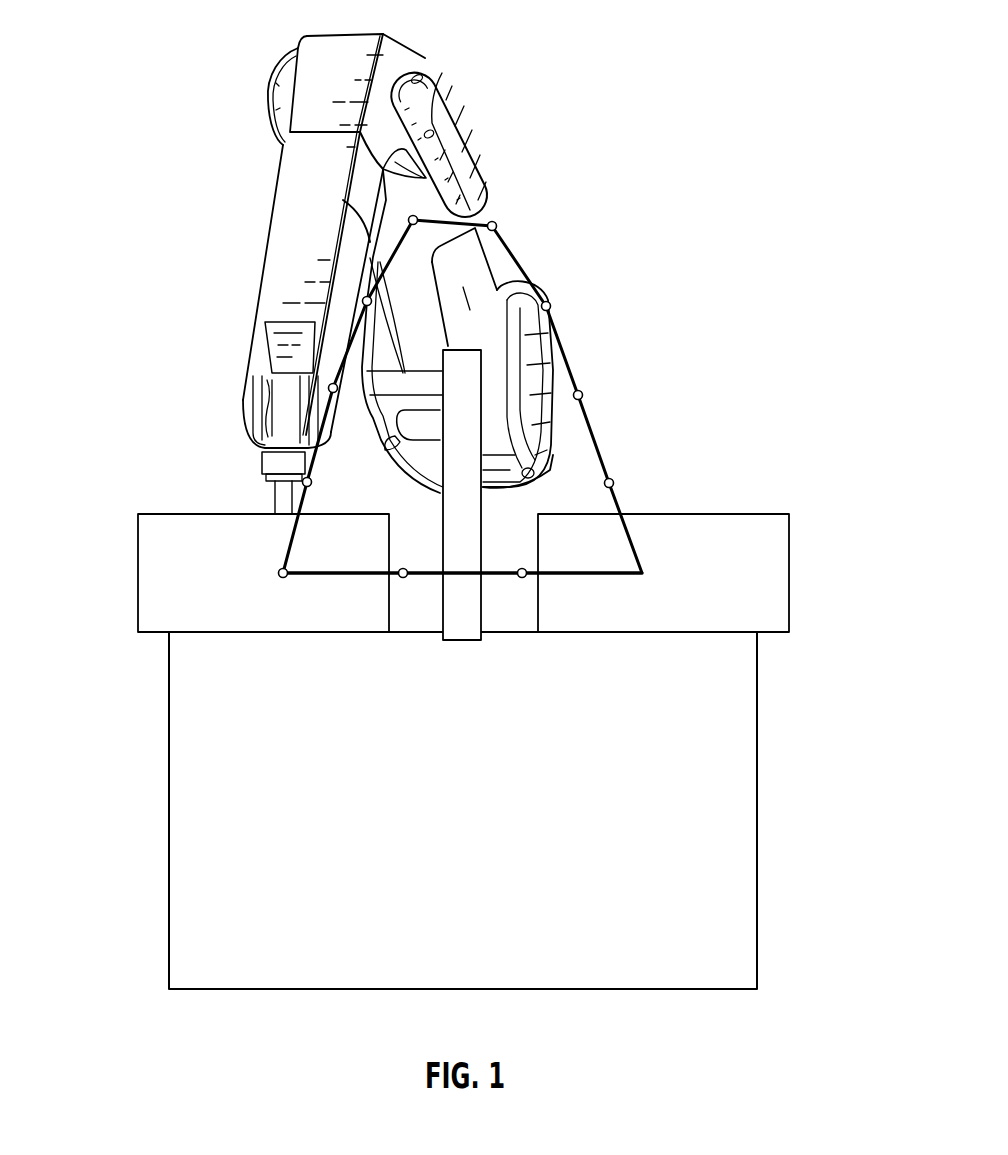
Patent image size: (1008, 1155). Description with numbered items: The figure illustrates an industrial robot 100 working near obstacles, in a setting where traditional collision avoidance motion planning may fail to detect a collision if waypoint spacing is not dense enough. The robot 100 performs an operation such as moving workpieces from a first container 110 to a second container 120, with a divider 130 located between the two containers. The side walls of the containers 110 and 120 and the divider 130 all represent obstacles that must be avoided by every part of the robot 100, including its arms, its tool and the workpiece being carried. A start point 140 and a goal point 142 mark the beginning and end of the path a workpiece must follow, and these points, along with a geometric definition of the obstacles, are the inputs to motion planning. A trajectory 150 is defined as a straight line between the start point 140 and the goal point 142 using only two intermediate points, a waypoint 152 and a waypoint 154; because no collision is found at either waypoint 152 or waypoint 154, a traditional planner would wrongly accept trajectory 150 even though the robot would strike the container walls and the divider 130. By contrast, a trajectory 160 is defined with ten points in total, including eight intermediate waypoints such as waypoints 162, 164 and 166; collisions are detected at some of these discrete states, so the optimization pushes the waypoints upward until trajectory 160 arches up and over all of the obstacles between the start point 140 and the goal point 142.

The robot 100 is at (465, 115).
The first container 110 is at (790, 553).
The second container 120 is at (137, 572).
The divider 130 is at (455, 642).
The start point 140 is at (650, 572).
The goal point 142 is at (283, 578).
The trajectory 150 is at (577, 577).
The waypoint 152 is at (522, 578).
The waypoint 154 is at (402, 578).
The trajectory 160 is at (482, 456).
The intermediate waypoint 162 is at (613, 483).
The intermediate waypoint 164 is at (582, 393).
The intermediate waypoint 166 is at (549, 306).